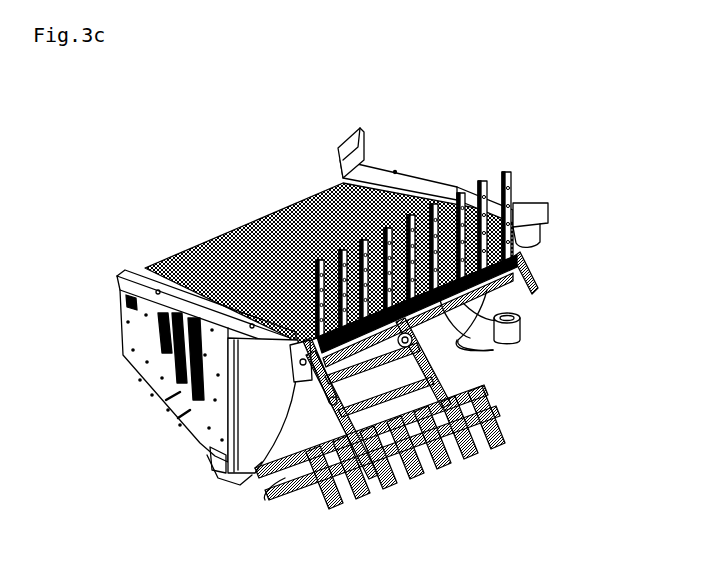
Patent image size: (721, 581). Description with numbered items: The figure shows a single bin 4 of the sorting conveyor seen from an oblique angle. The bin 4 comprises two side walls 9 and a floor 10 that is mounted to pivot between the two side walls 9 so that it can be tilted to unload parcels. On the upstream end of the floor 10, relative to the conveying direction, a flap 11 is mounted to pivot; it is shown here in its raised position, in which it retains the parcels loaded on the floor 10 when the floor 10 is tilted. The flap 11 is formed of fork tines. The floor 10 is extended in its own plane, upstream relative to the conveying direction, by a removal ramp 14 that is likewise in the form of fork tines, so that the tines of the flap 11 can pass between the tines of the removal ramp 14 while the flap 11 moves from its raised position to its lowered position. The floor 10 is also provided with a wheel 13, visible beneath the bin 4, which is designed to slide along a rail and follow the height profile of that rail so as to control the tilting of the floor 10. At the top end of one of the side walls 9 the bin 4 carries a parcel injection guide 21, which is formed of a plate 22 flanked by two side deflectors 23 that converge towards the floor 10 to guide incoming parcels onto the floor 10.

The bin 4 is at (568, 272).
The side wall 9 is at (252, 457).
The floor 10 is at (240, 235).
The flap 11 is at (514, 176).
The wheel 13 is at (411, 340).
The removal ramp 14 is at (489, 472).
The parcel injection guide 21 is at (446, 166).
The plate 22 is at (373, 166).
The side deflector 23 is at (348, 131).